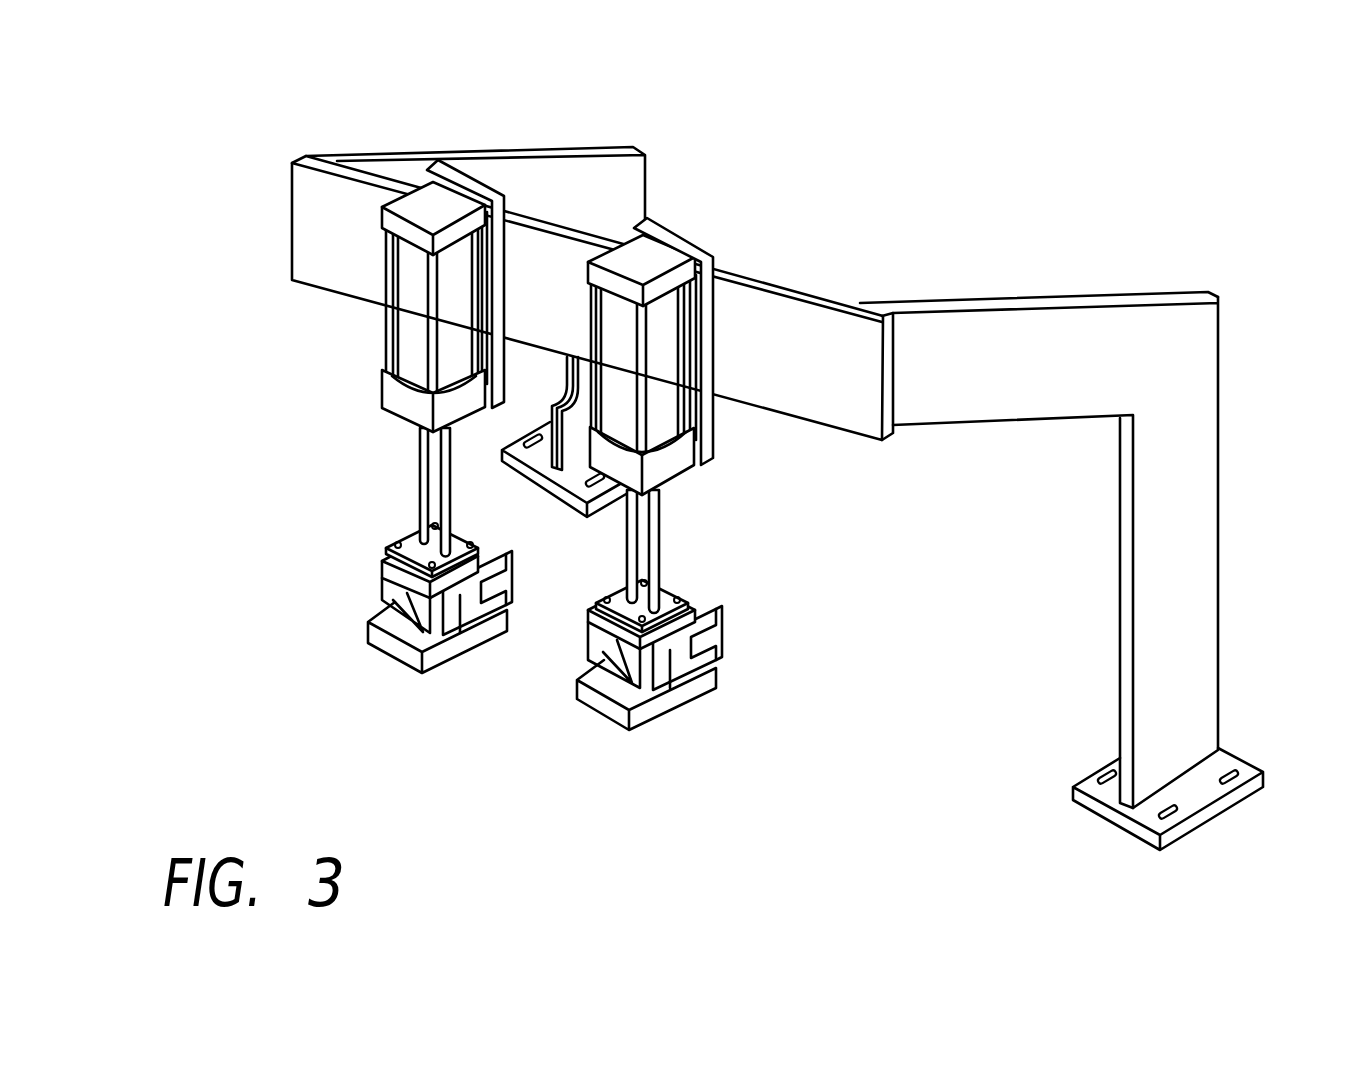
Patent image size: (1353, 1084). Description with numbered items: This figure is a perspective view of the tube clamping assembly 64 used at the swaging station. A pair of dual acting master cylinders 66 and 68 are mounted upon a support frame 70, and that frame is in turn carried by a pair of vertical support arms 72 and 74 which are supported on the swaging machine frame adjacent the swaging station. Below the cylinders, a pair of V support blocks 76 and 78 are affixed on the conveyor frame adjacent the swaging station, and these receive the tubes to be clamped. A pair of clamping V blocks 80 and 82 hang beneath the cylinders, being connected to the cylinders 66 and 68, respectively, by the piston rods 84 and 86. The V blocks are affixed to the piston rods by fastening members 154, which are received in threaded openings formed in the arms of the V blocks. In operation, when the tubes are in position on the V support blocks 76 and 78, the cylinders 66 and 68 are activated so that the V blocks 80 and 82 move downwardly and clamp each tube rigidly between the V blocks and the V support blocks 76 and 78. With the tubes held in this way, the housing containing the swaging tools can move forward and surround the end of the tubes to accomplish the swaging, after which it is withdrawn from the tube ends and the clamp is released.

The tube clamping assembly 64 is at (200, 444).
The dual acting master cylinder 66 is at (662, 375).
The dual acting master cylinder 68 is at (415, 328).
The support frame 70 is at (323, 232).
The vertical support arm 72 is at (1193, 473).
The vertical support arm 74 is at (542, 185).
The V support block 76 is at (710, 630).
The V support block 78 is at (385, 648).
The V block 80 is at (688, 647).
The V block 82 is at (383, 583).
The piston rod 84 is at (663, 520).
The piston rod 86 is at (457, 502).
The fastening members 154 is at (433, 523).